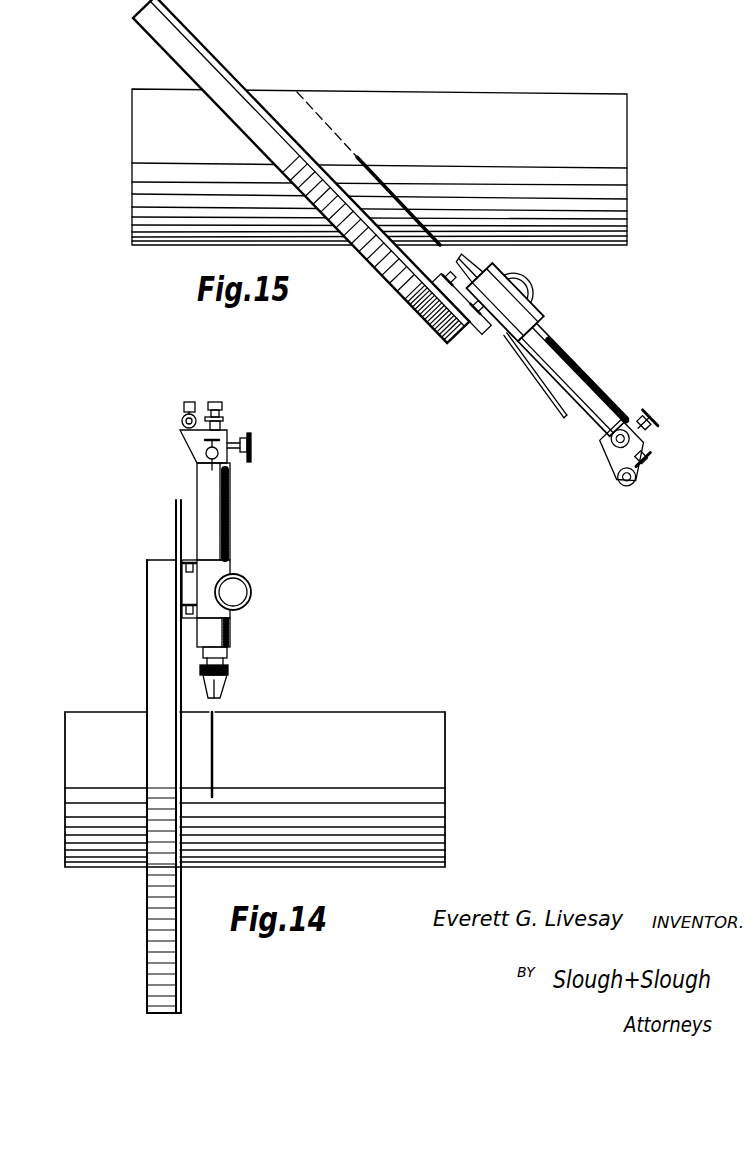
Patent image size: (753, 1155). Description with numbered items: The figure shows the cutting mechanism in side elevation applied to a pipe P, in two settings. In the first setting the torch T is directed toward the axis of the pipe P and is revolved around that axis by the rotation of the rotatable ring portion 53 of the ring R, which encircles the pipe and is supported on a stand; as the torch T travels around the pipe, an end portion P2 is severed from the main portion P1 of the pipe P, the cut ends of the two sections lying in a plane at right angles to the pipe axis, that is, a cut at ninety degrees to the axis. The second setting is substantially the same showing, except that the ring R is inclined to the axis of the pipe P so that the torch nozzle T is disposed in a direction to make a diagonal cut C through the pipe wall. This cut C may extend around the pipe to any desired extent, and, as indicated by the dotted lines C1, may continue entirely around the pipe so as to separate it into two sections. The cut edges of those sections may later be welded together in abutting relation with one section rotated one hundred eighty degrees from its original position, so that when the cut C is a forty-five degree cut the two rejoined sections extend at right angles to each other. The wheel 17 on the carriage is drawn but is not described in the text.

In FIG. 15, the ring R is at (190, 50).
In FIG. 14, the ring R is at (162, 672).
In FIG. 15, the pipe P is at (400, 112).
In FIG. 14, the pipe P is at (282, 750).
In FIG. 15, the dotted-line extension of the cut C1 is at (329, 127).
In FIG. 15, the diagonal cut C is at (402, 197).
In FIG. 15, the torch T is at (473, 275).
In FIG. 14, the torch T is at (218, 677).
In FIG. 14, the rotatable ring portion 53 is at (178, 568).
In FIG. 14, the guide wheel / roller 17 is at (237, 592).
In FIG. 14, the end portion P2 is at (80, 733).
In FIG. 14, the main portion P1 is at (410, 733).